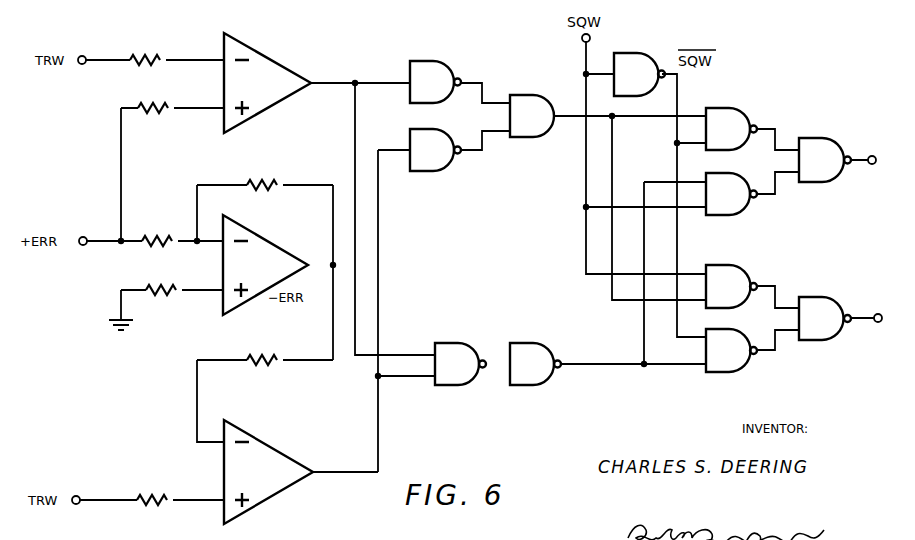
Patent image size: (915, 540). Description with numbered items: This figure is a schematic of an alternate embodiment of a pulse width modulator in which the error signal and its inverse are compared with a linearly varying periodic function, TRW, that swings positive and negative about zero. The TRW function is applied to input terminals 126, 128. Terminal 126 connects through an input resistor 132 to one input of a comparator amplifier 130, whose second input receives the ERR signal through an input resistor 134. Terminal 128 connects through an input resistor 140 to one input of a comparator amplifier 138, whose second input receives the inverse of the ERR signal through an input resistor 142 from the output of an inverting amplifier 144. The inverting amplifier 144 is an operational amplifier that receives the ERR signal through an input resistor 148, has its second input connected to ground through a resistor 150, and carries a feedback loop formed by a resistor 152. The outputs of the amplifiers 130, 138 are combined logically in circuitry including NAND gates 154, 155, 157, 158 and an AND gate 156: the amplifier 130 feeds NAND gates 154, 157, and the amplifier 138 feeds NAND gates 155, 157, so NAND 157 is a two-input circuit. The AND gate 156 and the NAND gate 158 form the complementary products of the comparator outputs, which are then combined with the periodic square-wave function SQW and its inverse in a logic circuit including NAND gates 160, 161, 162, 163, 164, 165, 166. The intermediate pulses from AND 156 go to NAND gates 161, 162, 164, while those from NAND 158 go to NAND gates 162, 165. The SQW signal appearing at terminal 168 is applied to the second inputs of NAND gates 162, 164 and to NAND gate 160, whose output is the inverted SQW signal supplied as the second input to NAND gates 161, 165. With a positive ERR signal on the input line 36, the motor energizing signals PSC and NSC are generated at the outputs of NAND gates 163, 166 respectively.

The input line 36 is at (85, 236).
The input terminal 126 is at (85, 55).
The input terminal 128 is at (79, 495).
The comparator amplifier 130 is at (262, 62).
The input resistor 132 is at (145, 55).
The input resistor 134 is at (147, 115).
The comparator amplifier 138 is at (270, 500).
The input resistor 140 is at (155, 495).
The input resistor 142 is at (258, 367).
The inverting amplifier 144 is at (265, 252).
The input resistor 148 is at (152, 237).
The resistor 150 is at (160, 298).
The feedback resistor 152 is at (263, 181).
The NAND gate 154 is at (433, 70).
The NAND gate 155 is at (430, 165).
The AND gate 156 is at (527, 128).
The NAND gate 157 is at (452, 353).
The NAND gate 158 is at (540, 353).
The NAND gate 160 is at (627, 60).
The NAND gate 161 is at (727, 112).
The NAND gate 162 is at (748, 208).
The NAND gate 163 is at (818, 142).
The NAND gate 164 is at (736, 276).
The NAND gate 165 is at (745, 368).
The NAND gate 166 is at (822, 298).
The terminal 168 is at (582, 40).